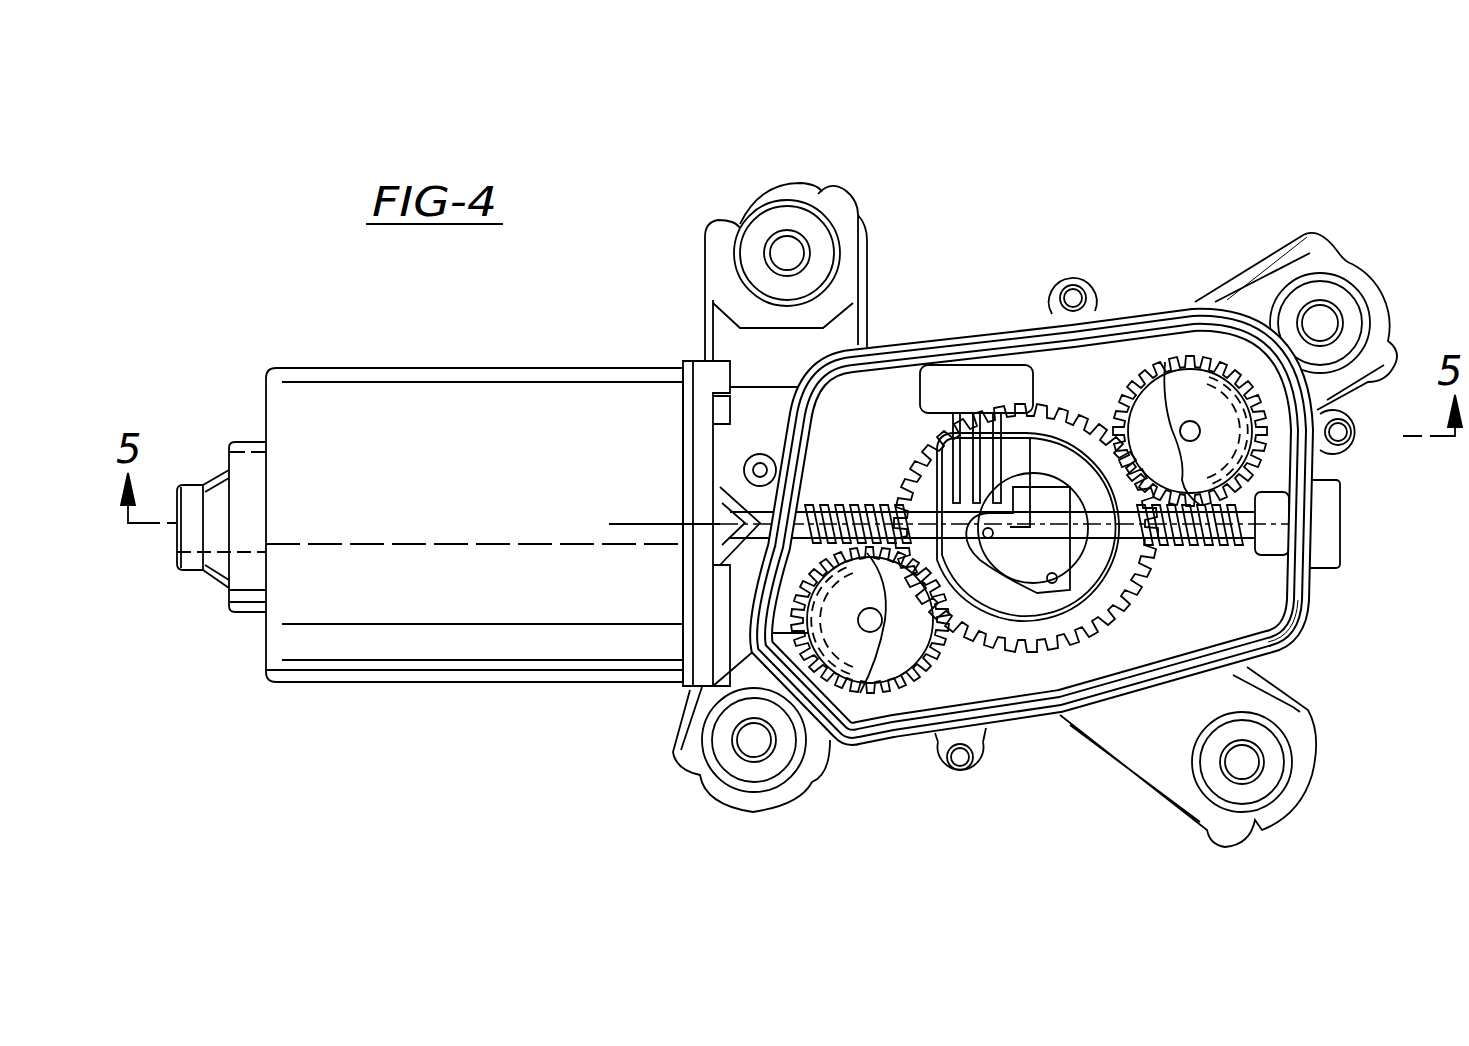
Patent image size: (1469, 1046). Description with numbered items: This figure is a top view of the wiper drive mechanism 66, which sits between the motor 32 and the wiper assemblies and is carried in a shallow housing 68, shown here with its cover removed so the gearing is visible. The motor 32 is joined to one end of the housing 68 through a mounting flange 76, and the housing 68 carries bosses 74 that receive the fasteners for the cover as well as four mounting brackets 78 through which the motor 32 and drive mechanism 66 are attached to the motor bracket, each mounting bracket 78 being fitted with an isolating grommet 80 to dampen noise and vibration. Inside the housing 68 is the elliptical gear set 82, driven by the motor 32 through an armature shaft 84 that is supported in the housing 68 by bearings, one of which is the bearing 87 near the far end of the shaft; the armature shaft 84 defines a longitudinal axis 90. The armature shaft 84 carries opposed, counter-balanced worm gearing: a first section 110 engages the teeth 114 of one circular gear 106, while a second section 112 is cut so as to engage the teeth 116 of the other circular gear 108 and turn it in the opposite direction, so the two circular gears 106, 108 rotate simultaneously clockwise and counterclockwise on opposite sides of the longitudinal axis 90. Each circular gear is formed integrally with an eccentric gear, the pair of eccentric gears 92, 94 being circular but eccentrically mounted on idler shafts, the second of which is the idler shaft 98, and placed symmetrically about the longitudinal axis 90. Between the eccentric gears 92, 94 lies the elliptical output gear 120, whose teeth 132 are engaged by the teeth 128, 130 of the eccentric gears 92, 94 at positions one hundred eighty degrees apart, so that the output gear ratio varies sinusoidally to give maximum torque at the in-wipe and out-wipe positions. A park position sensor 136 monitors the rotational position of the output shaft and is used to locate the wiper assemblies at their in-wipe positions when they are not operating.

The motor 32 is at (385, 385).
The wiper drive mechanism 66 is at (1325, 192).
The housing 68 is at (1320, 622).
The bosses 74 is at (1094, 288).
The mounting flange 76 is at (703, 367).
The mounting brackets 78 is at (1222, 834).
The isolating grommets 80 is at (803, 226).
The elliptical gear set 82 is at (893, 395).
The armature shaft 84 is at (797, 518).
The bearing 87 is at (1268, 515).
The longitudinal axis 90 is at (655, 523).
The eccentric gear 92 is at (903, 673).
The eccentric gear 94 is at (1160, 397).
The second idler shaft 98 is at (1200, 430).
The circular gear 106 is at (790, 604).
The circular gear 108 is at (1233, 377).
The first section 110 is at (866, 492).
The second section 112 is at (1228, 548).
The teeth 114 is at (857, 693).
The teeth 116 is at (1227, 373).
The elliptical output gear 120 is at (1055, 640).
The teeth 128 is at (940, 637).
The teeth 130 is at (1128, 390).
The teeth 132 is at (1125, 640).
The park position sensor 136 is at (975, 385).